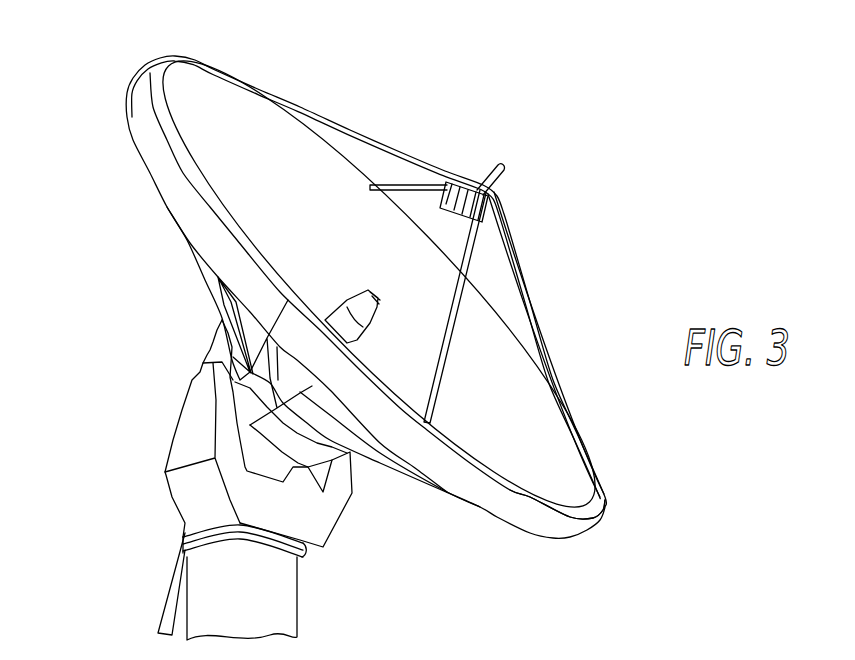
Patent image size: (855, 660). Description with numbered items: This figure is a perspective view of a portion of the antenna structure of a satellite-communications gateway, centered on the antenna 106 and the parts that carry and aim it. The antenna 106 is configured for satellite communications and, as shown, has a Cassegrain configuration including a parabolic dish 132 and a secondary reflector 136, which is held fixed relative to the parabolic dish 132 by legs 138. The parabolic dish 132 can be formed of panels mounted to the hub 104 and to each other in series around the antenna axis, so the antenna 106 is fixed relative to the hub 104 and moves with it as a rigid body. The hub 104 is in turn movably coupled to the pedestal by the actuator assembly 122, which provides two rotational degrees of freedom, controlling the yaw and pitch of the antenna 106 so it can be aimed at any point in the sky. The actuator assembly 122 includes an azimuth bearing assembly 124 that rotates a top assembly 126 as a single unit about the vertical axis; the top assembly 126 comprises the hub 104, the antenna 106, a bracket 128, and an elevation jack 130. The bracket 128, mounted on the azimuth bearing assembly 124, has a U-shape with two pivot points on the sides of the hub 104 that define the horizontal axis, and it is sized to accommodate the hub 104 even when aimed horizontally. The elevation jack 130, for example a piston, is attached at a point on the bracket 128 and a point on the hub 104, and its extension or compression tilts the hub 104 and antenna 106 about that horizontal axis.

The hub 104 is at (247, 407).
The antenna 106 is at (133, 66).
The actuator assembly 122 is at (160, 497).
The azimuth bearing assembly 124 is at (303, 547).
The top assembly 126 is at (146, 293).
The bracket 128 is at (320, 513).
The elevation jack 130 is at (163, 611).
The parabolic dish 132 is at (527, 473).
The secondary reflector 136 is at (455, 205).
The legs 138 is at (412, 185).